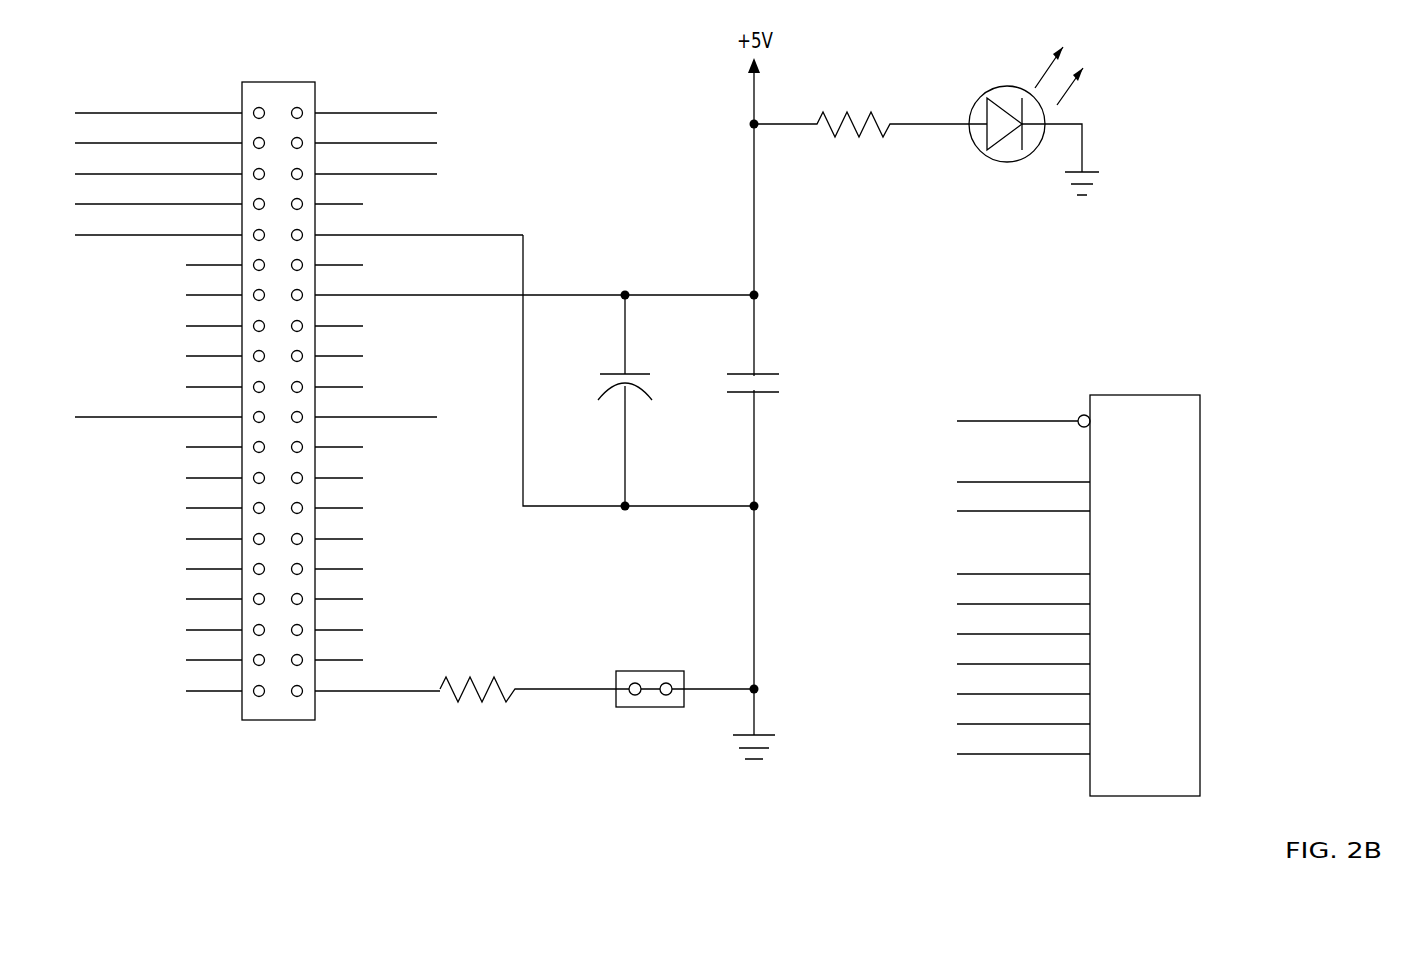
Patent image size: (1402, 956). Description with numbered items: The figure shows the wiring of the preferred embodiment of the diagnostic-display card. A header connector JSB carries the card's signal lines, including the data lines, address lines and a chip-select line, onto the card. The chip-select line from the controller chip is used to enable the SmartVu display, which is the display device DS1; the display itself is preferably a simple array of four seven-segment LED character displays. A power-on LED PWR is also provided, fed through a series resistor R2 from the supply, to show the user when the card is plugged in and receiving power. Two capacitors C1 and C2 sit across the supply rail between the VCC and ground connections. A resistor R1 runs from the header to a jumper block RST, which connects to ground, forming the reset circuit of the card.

The 40-pin header connector HDR,STM,.050 JSB is at (414, 406).
The resistor 220 ohm (reset) R1 is at (520, 689).
The resistor 220 ohm (power LED) R2 is at (861, 123).
The capacitor (polarized) C1 is at (630, 400).
The capacitor C2 is at (756, 367).
The reset jumper RST is at (677, 674).
The power-on LED PWR is at (1024, 123).
The HLG1414 display DS1 is at (1078, 600).